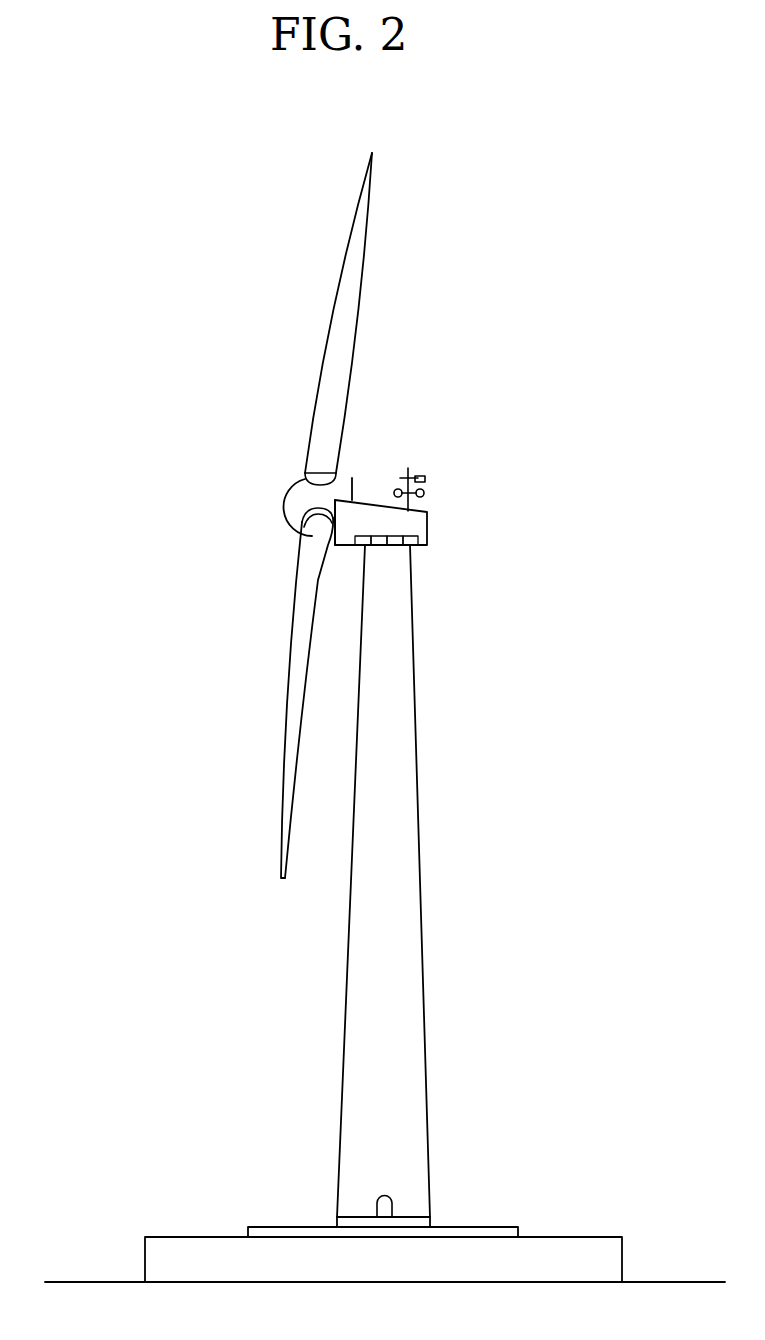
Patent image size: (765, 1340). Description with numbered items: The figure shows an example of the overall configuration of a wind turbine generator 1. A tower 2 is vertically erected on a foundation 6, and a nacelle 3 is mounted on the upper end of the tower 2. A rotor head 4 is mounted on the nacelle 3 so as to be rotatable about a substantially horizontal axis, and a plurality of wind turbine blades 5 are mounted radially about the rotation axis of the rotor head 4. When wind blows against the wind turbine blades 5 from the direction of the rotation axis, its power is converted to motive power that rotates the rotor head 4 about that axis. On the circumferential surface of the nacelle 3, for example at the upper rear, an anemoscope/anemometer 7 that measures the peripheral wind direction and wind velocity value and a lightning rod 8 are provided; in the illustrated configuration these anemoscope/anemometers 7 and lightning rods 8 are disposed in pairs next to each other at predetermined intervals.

The wind turbine generator 1 is at (533, 418).
The tower 2 is at (415, 737).
The nacelle 3 is at (423, 440).
The rotor head 4 is at (278, 510).
The wind turbine blade 5 is at (362, 258).
The foundation 6 is at (603, 1242).
The anemoscope/anemometer 7 is at (427, 490).
The lightning rod 8 is at (351, 478).